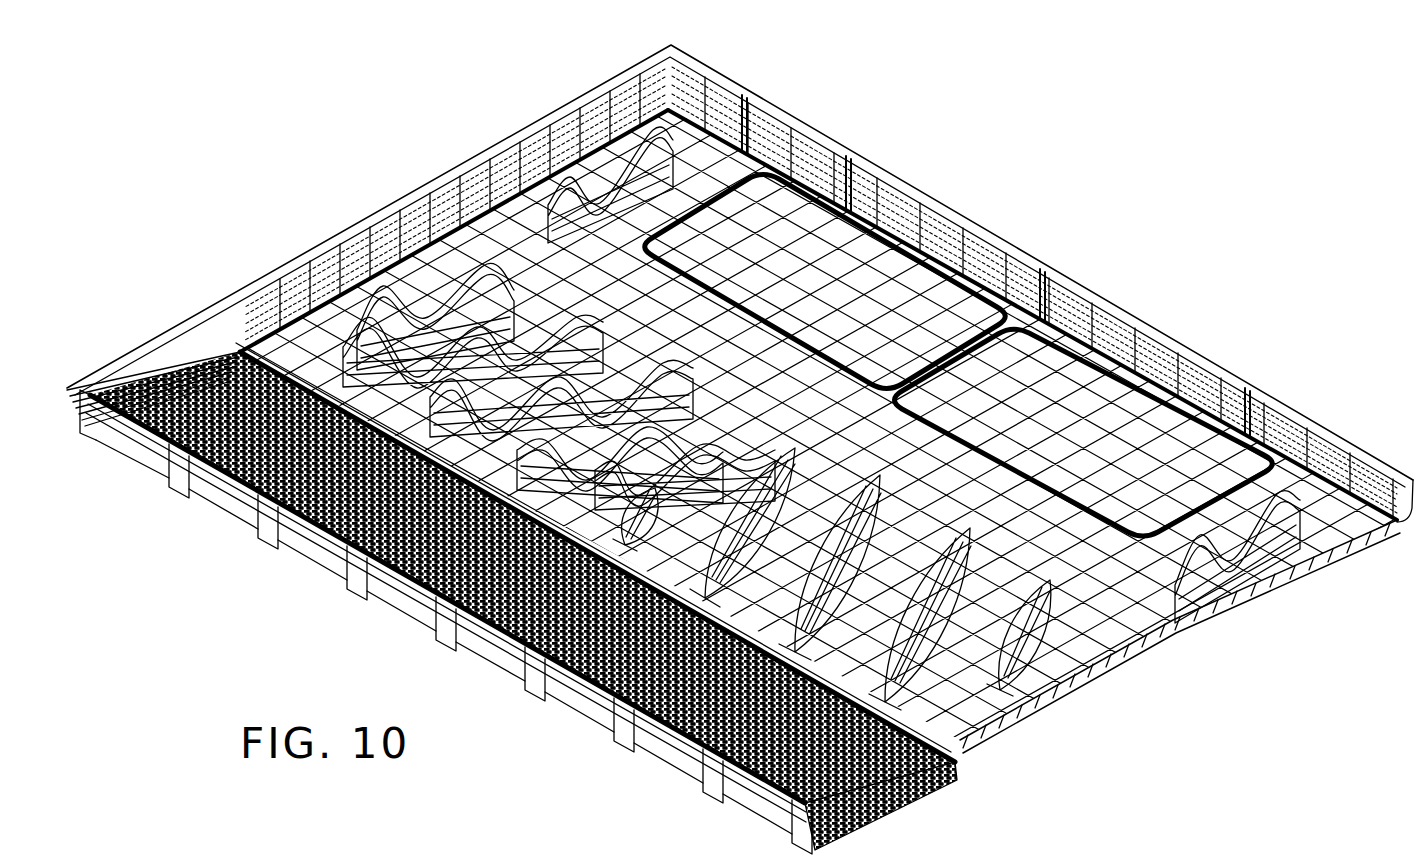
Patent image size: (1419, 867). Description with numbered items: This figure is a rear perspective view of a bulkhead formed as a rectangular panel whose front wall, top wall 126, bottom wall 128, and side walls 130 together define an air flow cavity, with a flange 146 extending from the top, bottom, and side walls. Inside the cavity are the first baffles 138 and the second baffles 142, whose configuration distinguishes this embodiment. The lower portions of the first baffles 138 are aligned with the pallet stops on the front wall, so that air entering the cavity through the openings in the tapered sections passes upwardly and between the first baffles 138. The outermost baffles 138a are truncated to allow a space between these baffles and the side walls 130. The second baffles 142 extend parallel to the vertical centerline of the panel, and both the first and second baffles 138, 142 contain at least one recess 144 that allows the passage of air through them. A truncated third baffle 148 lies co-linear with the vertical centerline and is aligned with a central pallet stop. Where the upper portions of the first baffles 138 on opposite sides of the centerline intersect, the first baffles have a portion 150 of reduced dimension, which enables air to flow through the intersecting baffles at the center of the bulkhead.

The top wall 126 is at (987, 253).
The bottom wall 128 is at (343, 560).
The side walls 130 is at (403, 228).
The first baffles 138 is at (497, 338).
The outermost baffles 138a is at (490, 285).
The second baffles 142 is at (665, 188).
The recess 144 is at (430, 297).
The flange 146 is at (548, 112).
The truncated third baffle 148 is at (657, 540).
The portion of reduced dimension 150 is at (793, 457).